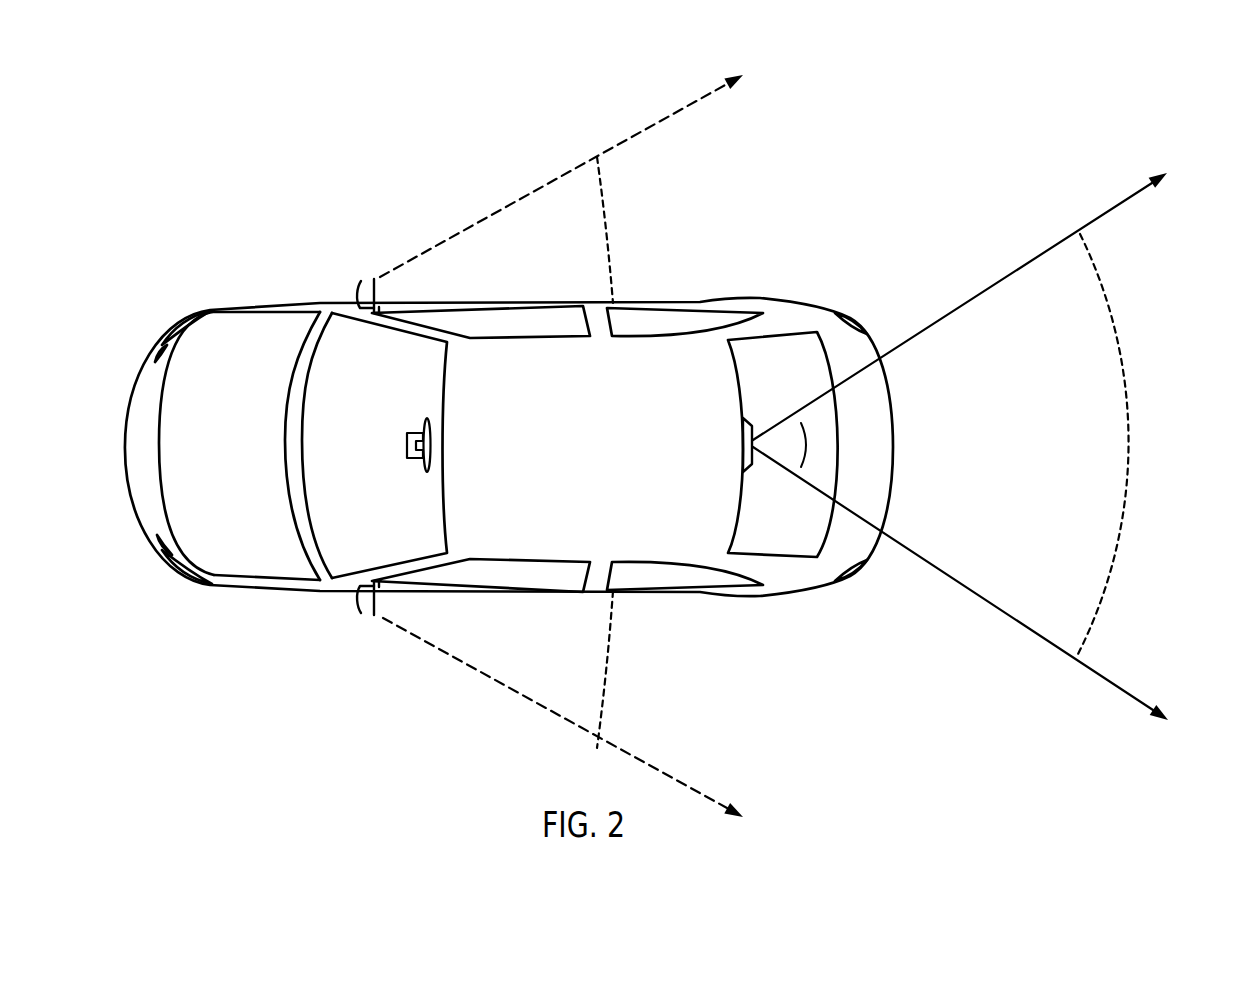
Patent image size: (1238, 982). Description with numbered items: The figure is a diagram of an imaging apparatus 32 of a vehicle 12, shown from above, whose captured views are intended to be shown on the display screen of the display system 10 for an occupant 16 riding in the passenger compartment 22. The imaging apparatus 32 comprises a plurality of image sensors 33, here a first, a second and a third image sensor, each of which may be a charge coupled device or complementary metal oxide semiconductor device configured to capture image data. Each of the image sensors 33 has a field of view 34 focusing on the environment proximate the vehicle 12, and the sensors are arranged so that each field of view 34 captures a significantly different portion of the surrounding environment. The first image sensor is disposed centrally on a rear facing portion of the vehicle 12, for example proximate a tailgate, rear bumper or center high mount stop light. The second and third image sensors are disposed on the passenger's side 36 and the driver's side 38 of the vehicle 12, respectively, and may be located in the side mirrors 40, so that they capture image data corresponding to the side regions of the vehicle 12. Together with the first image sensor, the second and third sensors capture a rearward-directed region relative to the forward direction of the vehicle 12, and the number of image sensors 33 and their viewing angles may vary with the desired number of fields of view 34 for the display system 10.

The display system 10 is at (210, 136).
The vehicle 12 is at (225, 338).
The occupant 16 is at (428, 420).
The passenger compartment 22 is at (427, 445).
The imaging apparatus 32 is at (285, 285).
The image sensors 33 is at (756, 445).
The field of view 34 is at (623, 224).
The passenger's side 36 is at (342, 262).
The driver's side 38 is at (303, 623).
The side mirrors 40 is at (380, 272).